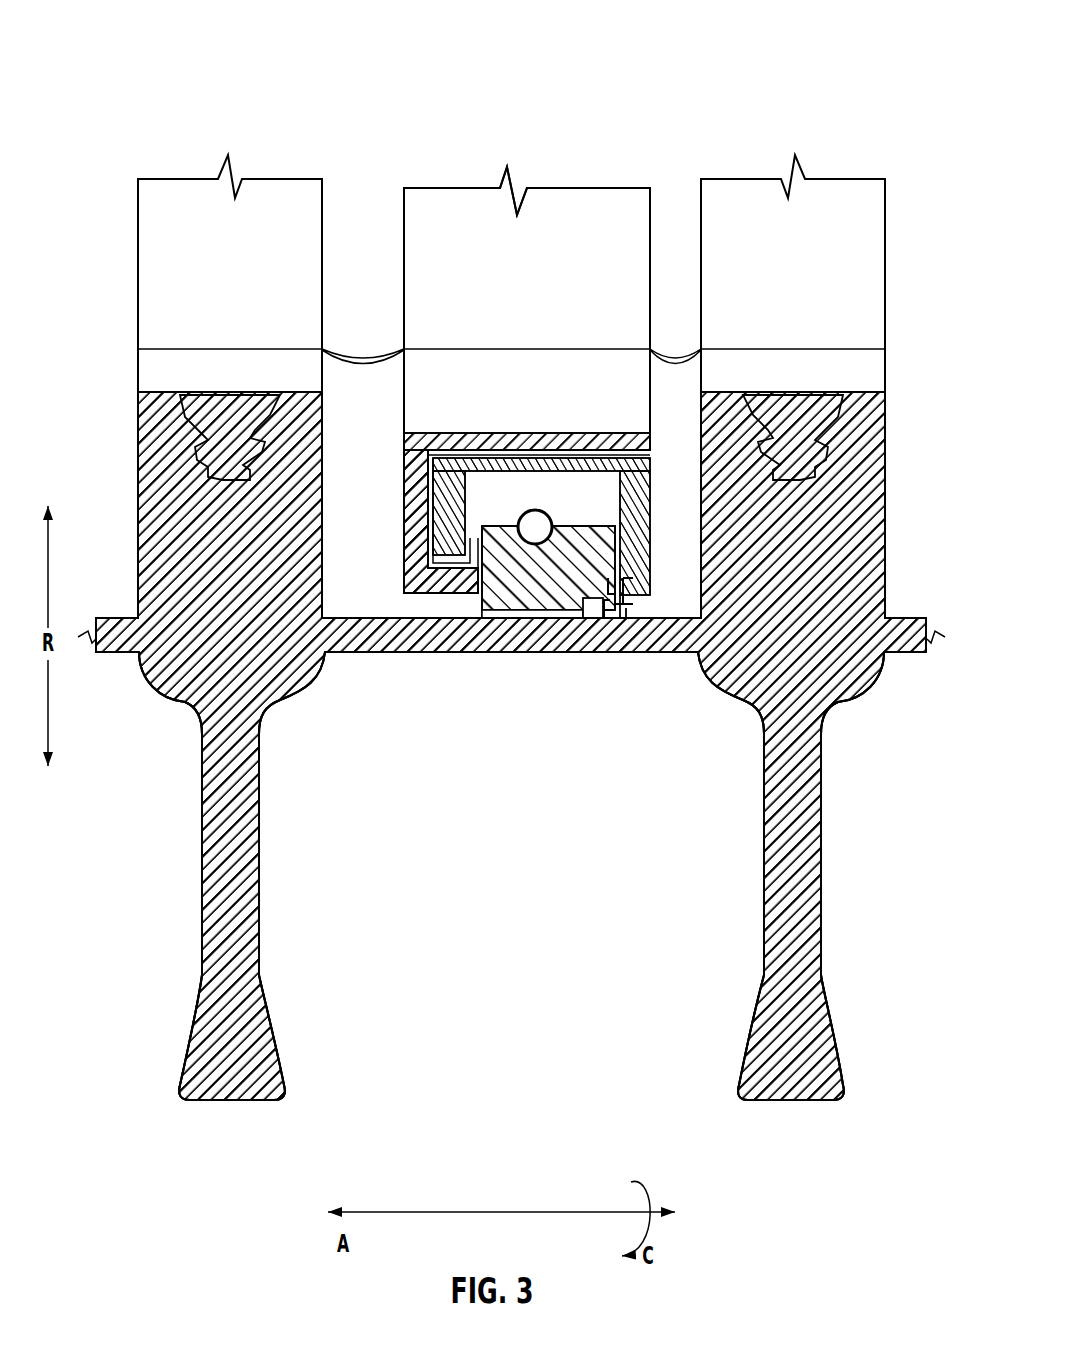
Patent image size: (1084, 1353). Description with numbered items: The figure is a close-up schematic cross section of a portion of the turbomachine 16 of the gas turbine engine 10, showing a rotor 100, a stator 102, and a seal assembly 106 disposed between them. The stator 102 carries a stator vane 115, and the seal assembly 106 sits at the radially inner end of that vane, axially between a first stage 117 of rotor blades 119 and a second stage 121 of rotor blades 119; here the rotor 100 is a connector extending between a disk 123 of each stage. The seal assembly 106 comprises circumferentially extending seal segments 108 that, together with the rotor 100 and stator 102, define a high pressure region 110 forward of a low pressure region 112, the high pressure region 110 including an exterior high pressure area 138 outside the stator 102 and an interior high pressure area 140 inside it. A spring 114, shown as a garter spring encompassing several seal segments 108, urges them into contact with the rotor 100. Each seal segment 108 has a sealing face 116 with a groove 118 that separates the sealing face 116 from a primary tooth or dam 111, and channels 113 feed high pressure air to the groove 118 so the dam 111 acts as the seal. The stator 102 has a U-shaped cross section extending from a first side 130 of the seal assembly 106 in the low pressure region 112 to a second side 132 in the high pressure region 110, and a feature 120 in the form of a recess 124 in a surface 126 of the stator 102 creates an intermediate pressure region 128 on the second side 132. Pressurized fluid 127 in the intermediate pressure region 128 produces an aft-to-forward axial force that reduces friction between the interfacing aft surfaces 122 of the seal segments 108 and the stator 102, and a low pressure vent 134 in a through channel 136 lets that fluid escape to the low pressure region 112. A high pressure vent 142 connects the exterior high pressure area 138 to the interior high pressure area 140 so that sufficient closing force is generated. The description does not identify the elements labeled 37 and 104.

The gas turbine engine 10 is at (902, 64).
The turbomachine 16 is at (938, 116).
The gap between blade platforms 37 is at (365, 207).
The rotor 100 is at (378, 637).
The stator 102 is at (577, 358).
The second surface 104 is at (625, 447).
The seal assembly 106 is at (592, 510).
The seal segments 108 is at (570, 520).
The high pressure region 110 is at (430, 324).
The primary tooth or dam 111 is at (620, 612).
The low pressure region 112 is at (689, 545).
The channels 113 is at (513, 616).
The spring 114 is at (517, 510).
The stator vane 115 is at (618, 198).
The sealing face 116 is at (547, 620).
The first stage of rotor blades 117 is at (176, 152).
The groove 118 is at (593, 620).
The rotor blades 119 is at (155, 270).
The feature 120 is at (468, 570).
The second stage of rotor blades 121 is at (820, 130).
The interfacing aft surfaces 122 is at (628, 602).
The disk 123 is at (165, 537).
The recess 124 is at (404, 601).
The surface of the stator 126 is at (478, 582).
The pressurized fluid 127 is at (430, 518).
The intermediate pressure region 128 is at (475, 555).
The first side of the seal assembly 130 is at (613, 572).
The second side of the seal assembly 132 is at (480, 540).
The low pressure vent 134 is at (603, 445).
The through channel 136 is at (563, 470).
The exterior high pressure area 138 is at (322, 465).
The interior high pressure area 140 is at (585, 486).
The high pressure vent 142 is at (478, 440).